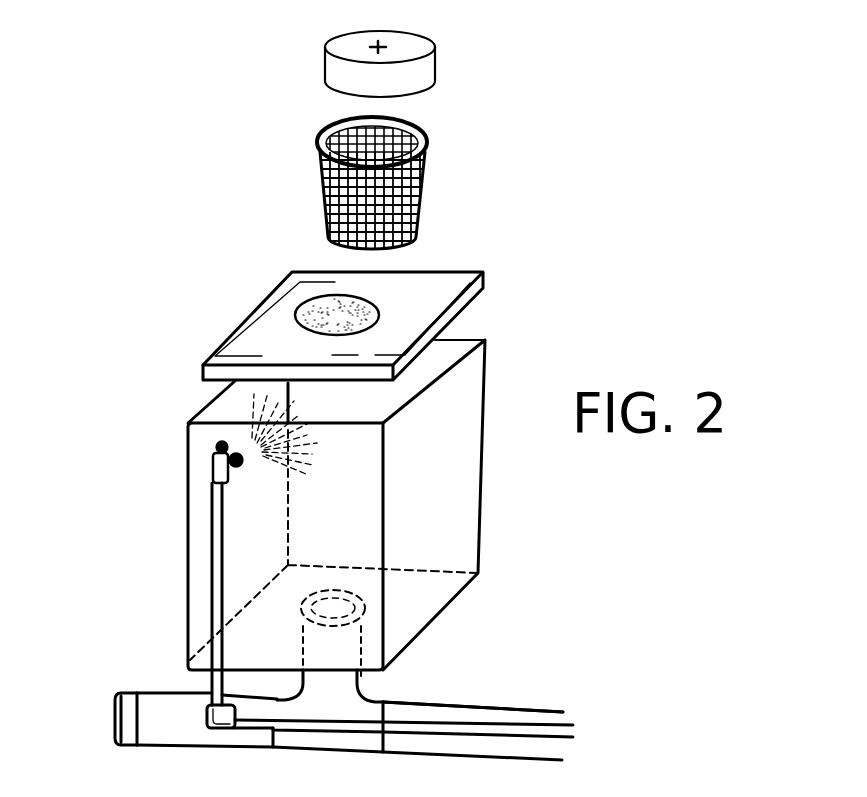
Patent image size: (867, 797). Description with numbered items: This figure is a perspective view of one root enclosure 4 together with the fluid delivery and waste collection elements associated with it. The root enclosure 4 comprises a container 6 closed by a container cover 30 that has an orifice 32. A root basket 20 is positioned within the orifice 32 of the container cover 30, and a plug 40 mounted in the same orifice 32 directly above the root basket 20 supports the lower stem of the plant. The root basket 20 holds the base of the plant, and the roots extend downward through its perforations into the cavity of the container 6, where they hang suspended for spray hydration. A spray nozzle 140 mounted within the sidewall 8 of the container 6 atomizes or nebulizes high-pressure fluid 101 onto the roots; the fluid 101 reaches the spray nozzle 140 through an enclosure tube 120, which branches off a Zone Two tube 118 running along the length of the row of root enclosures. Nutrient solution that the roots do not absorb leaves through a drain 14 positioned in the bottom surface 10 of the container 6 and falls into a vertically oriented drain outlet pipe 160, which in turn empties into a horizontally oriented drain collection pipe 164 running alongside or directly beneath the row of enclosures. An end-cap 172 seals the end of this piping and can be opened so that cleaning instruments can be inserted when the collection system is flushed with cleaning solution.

The root enclosure 4 is at (208, 167).
The container 6 is at (333, 492).
The sidewall 8 is at (203, 485).
The bottom surface 10 is at (425, 602).
The drain 14 is at (343, 613).
The root basket 20 is at (420, 185).
The container cover 30 is at (376, 303).
The orifice 32 is at (352, 315).
The plug 40 is at (418, 50).
The fluid 101 is at (257, 440).
The Zone Two tube 118 is at (423, 730).
The enclosure tube 120 is at (213, 573).
The spray nozzle 140 is at (238, 468).
The drain outlet pipe 160 is at (320, 653).
The drain collection pipe 164 is at (523, 712).
The end-cap 172 is at (132, 737).